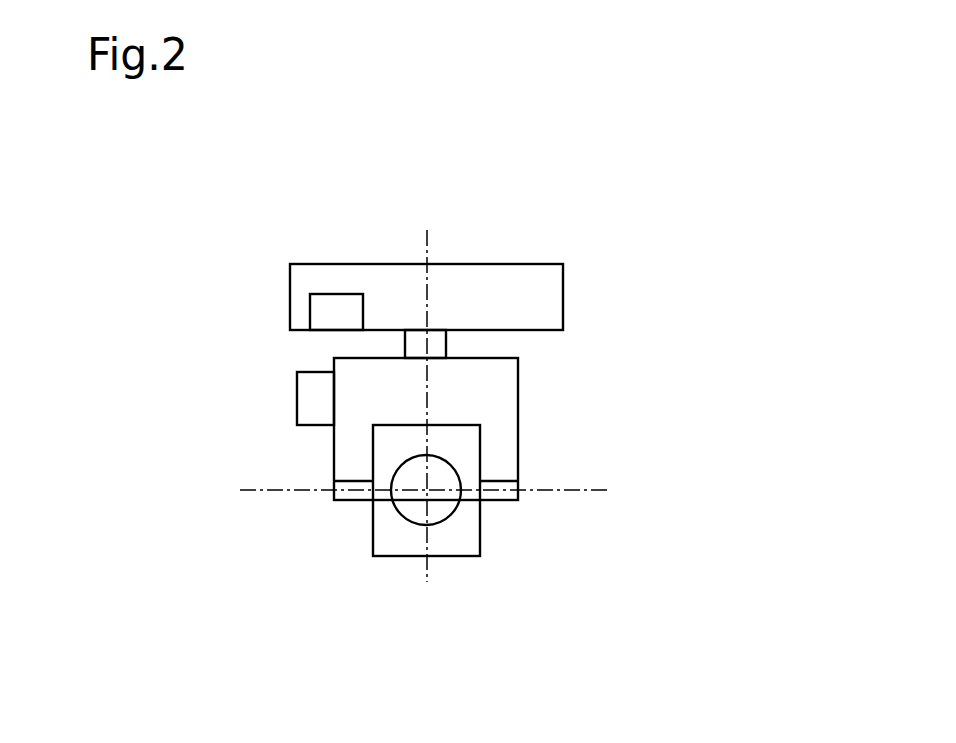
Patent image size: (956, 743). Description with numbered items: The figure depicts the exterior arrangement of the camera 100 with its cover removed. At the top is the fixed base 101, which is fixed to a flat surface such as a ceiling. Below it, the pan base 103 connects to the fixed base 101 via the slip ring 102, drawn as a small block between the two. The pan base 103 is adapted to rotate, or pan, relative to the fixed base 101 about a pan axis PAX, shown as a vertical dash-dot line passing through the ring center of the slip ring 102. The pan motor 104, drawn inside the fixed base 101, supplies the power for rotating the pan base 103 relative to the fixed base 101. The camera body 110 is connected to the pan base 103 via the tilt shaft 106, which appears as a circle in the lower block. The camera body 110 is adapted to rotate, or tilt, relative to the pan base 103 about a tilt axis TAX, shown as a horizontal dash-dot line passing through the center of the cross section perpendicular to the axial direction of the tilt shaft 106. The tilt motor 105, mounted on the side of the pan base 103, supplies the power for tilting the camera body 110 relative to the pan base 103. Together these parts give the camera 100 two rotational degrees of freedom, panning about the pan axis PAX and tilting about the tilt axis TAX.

The camera 100 is at (585, 205).
The fixed base 101 is at (563, 300).
The slip ring 102 is at (446, 344).
The pan base 103 is at (518, 428).
The pan motor 104 is at (310, 310).
The tilt motor 105 is at (297, 400).
The tilt shaft 106 is at (503, 485).
The camera body 110 is at (452, 512).
The pan axis PAX is at (427, 243).
The tilt axis TAX is at (600, 490).